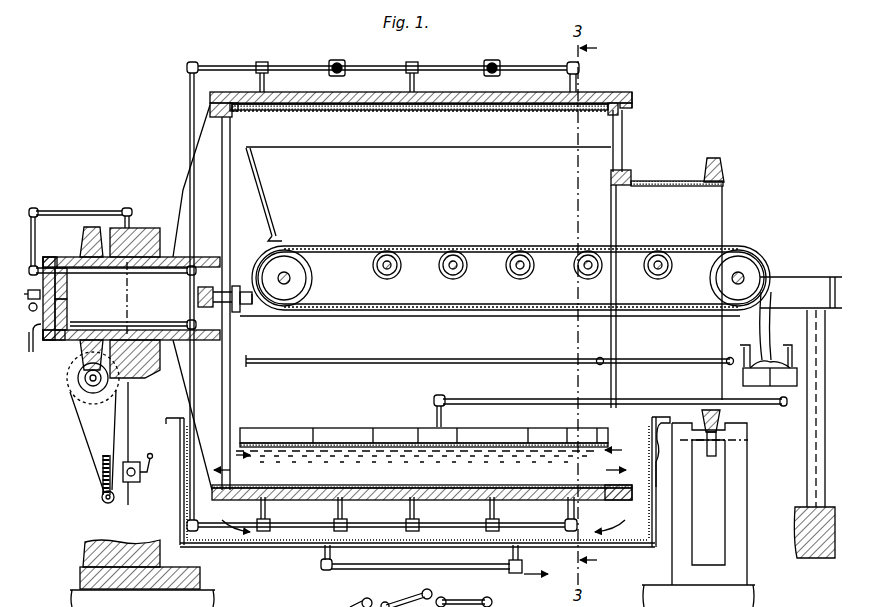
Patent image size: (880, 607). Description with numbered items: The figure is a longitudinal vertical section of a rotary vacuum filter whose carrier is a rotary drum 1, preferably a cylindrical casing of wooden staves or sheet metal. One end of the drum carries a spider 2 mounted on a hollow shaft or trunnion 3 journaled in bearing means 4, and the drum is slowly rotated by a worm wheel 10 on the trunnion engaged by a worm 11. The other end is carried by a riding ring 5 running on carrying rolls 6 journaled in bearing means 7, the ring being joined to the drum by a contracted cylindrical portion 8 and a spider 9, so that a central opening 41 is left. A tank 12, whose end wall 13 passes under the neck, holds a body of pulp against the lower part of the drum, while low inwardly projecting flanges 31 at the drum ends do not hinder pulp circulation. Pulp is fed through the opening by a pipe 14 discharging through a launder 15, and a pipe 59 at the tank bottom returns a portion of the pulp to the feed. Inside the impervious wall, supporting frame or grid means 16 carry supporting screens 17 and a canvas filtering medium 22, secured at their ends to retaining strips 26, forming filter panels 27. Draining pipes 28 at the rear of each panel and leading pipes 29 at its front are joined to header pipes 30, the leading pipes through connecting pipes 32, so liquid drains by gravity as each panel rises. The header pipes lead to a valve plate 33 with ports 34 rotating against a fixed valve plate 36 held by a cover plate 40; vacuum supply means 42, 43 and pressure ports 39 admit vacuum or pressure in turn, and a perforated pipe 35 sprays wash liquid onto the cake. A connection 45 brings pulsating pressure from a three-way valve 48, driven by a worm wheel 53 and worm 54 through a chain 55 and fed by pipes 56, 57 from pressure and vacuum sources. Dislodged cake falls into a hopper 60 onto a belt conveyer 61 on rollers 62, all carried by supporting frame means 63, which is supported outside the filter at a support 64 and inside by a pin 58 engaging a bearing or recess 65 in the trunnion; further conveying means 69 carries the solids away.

The rotary drum 1 is at (626, 93).
The spider 2 is at (230, 198).
The hollow shaft or trunnion 3 is at (143, 231).
The bearing means 4 is at (134, 210).
The riding ring 5 is at (722, 160).
The carrying rolls 6 is at (708, 452).
The bearing means 7 is at (748, 445).
The contracted cylindrical portion 8 is at (650, 180).
The spider 9 is at (624, 132).
The worm wheel 10 is at (85, 240).
The worm 11 is at (76, 388).
The tank 12 is at (181, 506).
The end wall 13 is at (666, 452).
The pipe 14 is at (530, 398).
The launder 15 is at (376, 428).
The supporting frame or grid means 16 is at (399, 106).
The supporting screens 17 is at (372, 110).
The filtering medium 22 is at (325, 110).
The supporting or retaining strips 26 is at (237, 111).
The filter panel 27 is at (470, 104).
The draining pipes 28 is at (256, 81).
The leading pipes 29 is at (344, 513).
The header pipes 30 is at (292, 66).
The inwardly projecting flanges 31 is at (238, 481).
The connecting pipes 32 is at (340, 72).
The valve plate 33 is at (67, 292).
The ports 34 is at (67, 324).
The perforated pipe 35 is at (447, 359).
The fixed valve plate 36 is at (29, 308).
The pressure ports 39 is at (57, 260).
The cover plate 40 is at (50, 345).
The central opening 41 is at (688, 293).
The vacuum supply means 42 is at (31, 353).
The vacuum supply means 43 is at (27, 292).
The connection 45 is at (52, 210).
The three-way valve 48 is at (125, 503).
The worm wheel 53 is at (103, 478).
The worm 54 is at (106, 504).
The chain 55 is at (80, 432).
The pipe 56 is at (134, 483).
The pipe 57 is at (150, 465).
The pin 58 is at (243, 314).
The pipe 59 is at (368, 575).
The hopper 60 is at (264, 191).
The belt conveyer 61 is at (338, 253).
The rollers 62 is at (307, 287).
The supporting frame means 63 is at (266, 317).
The outside support 64 is at (808, 470).
The bearing or recess 65 is at (200, 306).
The conveying means 69 is at (768, 386).